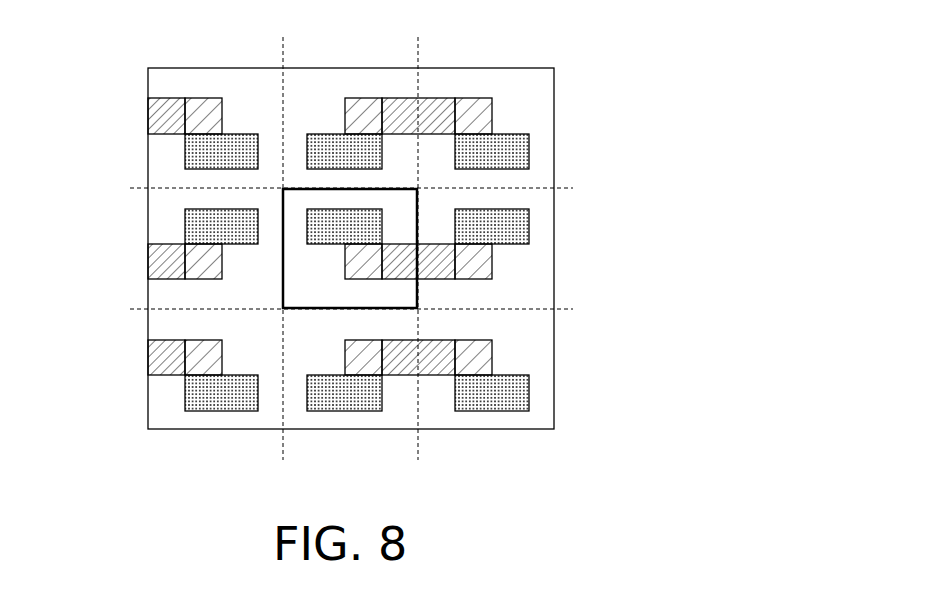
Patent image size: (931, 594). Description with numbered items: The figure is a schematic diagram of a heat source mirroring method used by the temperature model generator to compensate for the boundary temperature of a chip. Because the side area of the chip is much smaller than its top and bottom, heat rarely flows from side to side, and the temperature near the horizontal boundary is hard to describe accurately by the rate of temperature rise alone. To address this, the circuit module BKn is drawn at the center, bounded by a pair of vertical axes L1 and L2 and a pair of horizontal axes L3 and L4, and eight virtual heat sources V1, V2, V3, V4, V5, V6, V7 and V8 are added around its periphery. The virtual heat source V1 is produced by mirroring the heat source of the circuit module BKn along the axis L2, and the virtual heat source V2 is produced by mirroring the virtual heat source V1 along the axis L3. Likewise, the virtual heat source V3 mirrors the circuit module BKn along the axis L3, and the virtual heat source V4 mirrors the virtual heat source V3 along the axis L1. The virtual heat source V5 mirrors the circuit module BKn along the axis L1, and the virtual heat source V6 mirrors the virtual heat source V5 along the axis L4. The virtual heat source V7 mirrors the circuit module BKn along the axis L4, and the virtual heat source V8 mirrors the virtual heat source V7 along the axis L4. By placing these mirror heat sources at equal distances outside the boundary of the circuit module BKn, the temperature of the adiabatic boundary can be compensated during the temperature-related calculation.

The virtual heat source V1 is at (543, 256).
The virtual heat source V2 is at (543, 129).
The virtual heat source V3 is at (348, 82).
The virtual heat source V4 is at (218, 82).
The virtual heat source V5 is at (165, 227).
The virtual heat source V6 is at (165, 393).
The virtual heat source V7 is at (343, 418).
The virtual heat source V8 is at (492, 418).
The axis L1 is at (283, 237).
The axis L2 is at (418, 237).
The axis L3 is at (366, 187).
The axis L4 is at (366, 307).
The circuit module BKn is at (412, 297).